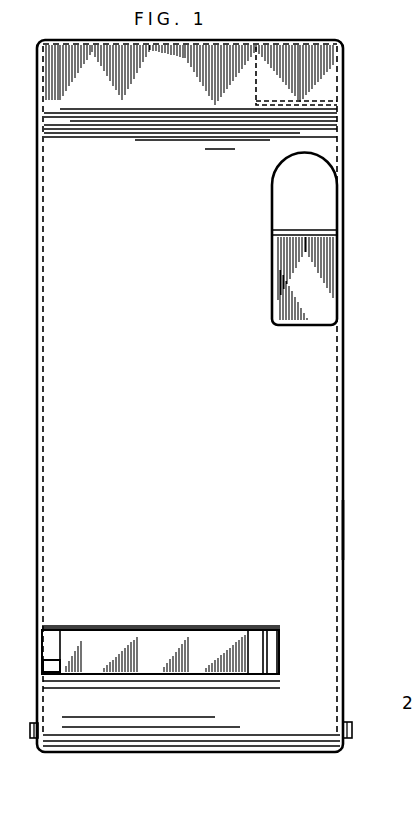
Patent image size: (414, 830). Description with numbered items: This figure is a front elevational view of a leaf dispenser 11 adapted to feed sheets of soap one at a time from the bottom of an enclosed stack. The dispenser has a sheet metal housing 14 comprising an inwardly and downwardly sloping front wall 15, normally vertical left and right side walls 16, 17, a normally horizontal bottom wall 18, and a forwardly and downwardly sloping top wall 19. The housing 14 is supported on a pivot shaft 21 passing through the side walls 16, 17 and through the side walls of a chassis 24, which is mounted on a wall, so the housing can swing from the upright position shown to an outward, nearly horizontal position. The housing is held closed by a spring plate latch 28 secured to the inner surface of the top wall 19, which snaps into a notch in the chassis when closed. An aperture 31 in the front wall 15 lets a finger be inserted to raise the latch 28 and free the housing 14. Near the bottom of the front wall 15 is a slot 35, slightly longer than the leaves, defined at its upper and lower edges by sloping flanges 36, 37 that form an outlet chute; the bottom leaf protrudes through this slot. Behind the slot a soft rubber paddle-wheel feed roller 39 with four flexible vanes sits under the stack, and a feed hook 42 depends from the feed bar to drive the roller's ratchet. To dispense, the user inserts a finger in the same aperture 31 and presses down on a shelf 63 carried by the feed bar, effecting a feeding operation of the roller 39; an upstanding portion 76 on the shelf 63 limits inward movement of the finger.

The leaf dispenser 11 is at (345, 405).
The housing 14 is at (326, 484).
The front wall 15 is at (206, 470).
The side wall 16 is at (37, 463).
The side wall 17 is at (344, 546).
The bottom wall 18 is at (243, 753).
The top wall 19 is at (187, 78).
The pivot shaft 21 is at (37, 741).
The chassis 24 is at (406, 343).
The spring plate latch 28 is at (314, 84).
The aperture 31 is at (272, 257).
The slot 35 is at (228, 641).
The upper flange 36 is at (183, 640).
The lower flange 37 is at (218, 686).
The feed roller 39 is at (177, 661).
The feed hook 42 is at (57, 669).
The shelf 63 is at (318, 232).
The upstanding portion 76 is at (319, 191).